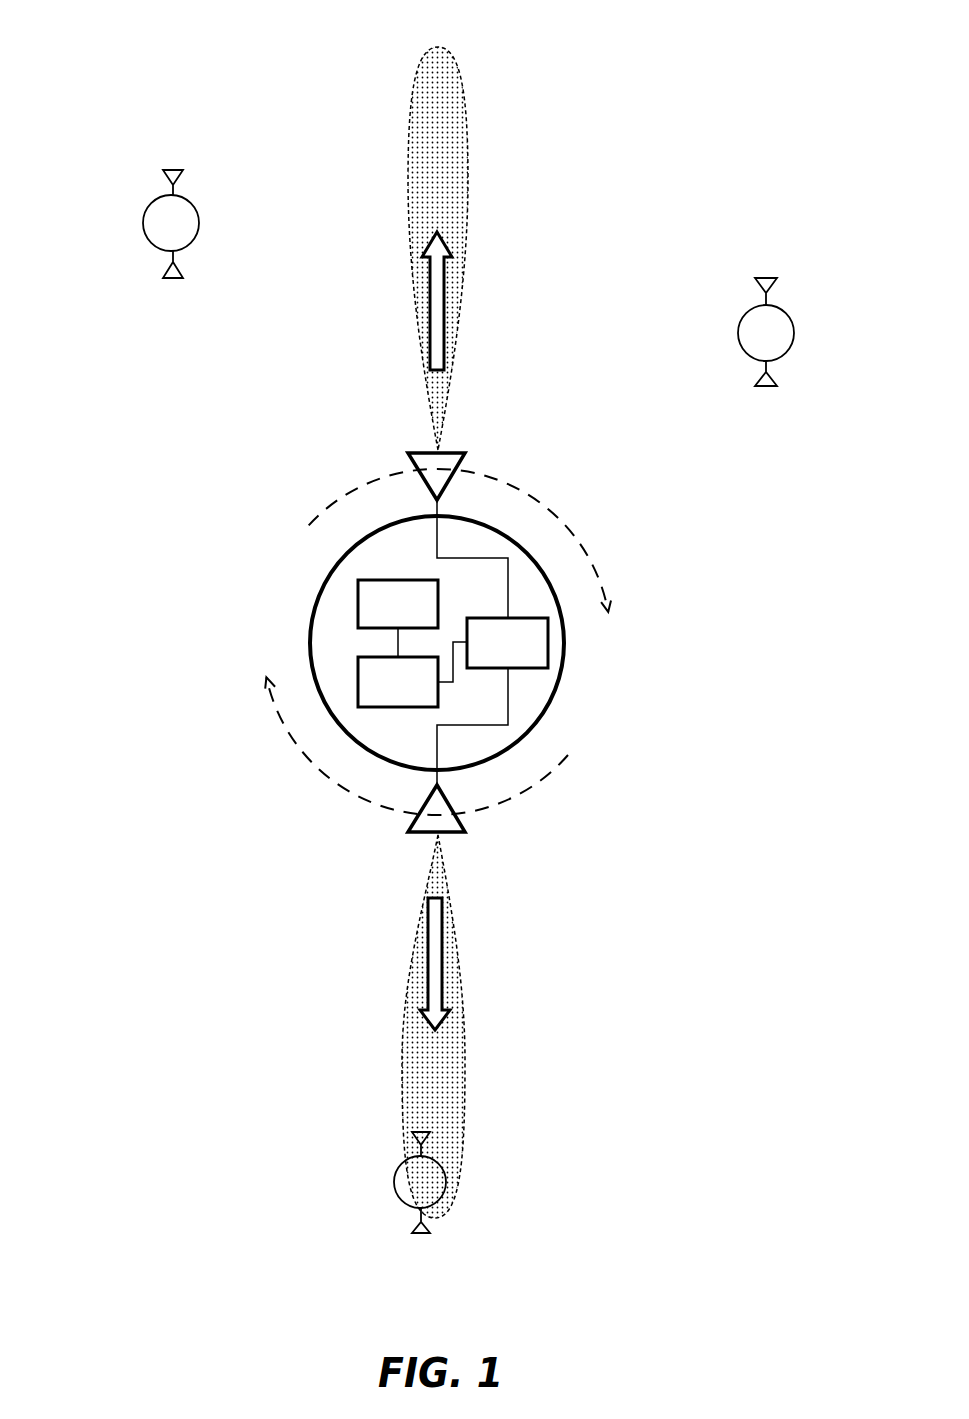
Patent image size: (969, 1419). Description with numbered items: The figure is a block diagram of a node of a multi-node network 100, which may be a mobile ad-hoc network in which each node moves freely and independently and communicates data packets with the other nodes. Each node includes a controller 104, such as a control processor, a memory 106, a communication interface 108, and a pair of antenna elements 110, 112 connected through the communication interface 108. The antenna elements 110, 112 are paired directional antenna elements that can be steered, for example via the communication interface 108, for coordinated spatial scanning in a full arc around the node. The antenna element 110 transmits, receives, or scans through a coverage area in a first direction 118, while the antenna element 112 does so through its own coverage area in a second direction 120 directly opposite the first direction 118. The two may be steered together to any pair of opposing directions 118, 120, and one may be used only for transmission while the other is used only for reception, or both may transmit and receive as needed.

The multi-node network 100 is at (177, 65).
The controller 104 is at (398, 682).
The memory 106 is at (398, 604).
The communication interface 108 is at (507, 643).
The antenna element 110 is at (408, 453).
The antenna element 112 is at (410, 830).
The first direction 118 is at (442, 340).
The second direction 120 is at (443, 965).